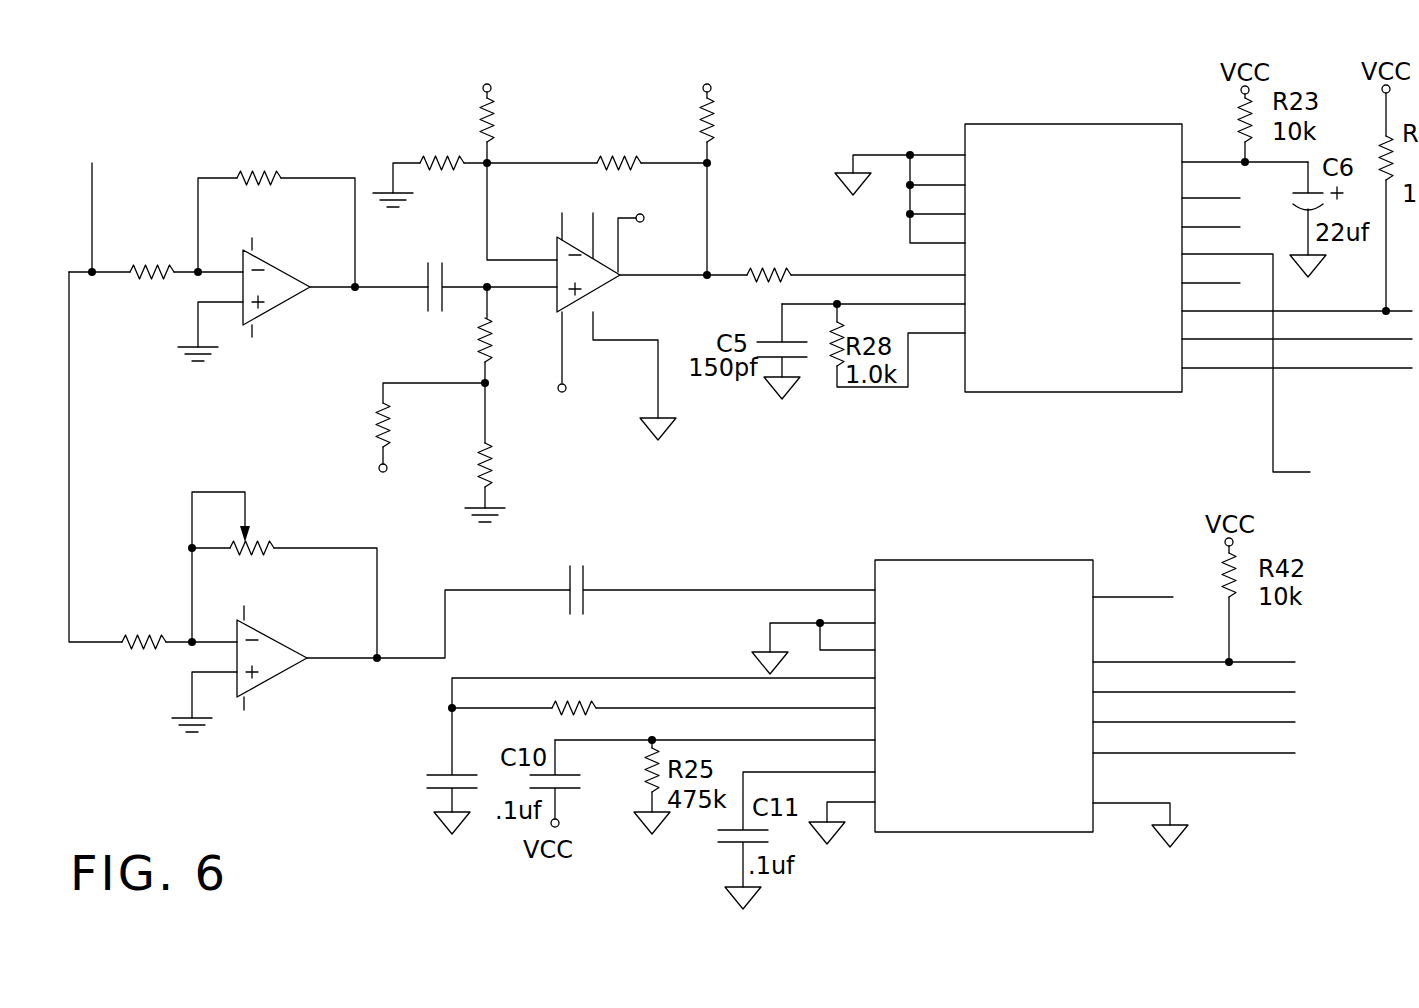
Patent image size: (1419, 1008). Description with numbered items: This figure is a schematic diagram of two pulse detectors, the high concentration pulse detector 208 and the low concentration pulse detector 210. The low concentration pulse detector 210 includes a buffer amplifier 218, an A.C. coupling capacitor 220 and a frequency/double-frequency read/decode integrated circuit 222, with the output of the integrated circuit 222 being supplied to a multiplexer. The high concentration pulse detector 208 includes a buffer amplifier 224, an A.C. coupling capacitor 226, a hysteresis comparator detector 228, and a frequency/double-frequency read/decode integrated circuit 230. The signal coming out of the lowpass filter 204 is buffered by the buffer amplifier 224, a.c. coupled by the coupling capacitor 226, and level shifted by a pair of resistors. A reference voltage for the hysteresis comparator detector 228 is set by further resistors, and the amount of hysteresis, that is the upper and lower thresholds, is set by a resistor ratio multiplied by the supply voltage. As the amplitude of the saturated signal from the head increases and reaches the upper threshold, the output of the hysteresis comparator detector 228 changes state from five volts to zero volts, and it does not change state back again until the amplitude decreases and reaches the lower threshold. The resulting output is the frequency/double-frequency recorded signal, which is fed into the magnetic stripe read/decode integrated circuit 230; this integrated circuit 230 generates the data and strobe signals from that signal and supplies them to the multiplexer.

The lowpass filter 204 is at (95, 191).
The high concentration pulse detector 208 is at (816, 152).
The low concentration pulse detector 210 is at (355, 749).
The buffer amplifier 218 is at (397, 572).
The A.C. coupling capacitor 220 is at (614, 557).
The F/2F read/decode integrated circuit 222 is at (996, 541).
The buffer amplifier 224 is at (296, 134).
The A.C. coupling capacitor 226 is at (397, 336).
The hysteresis comparator detector 228 is at (695, 447).
The F/2F read/decode integrated circuit 230 is at (1146, 405).